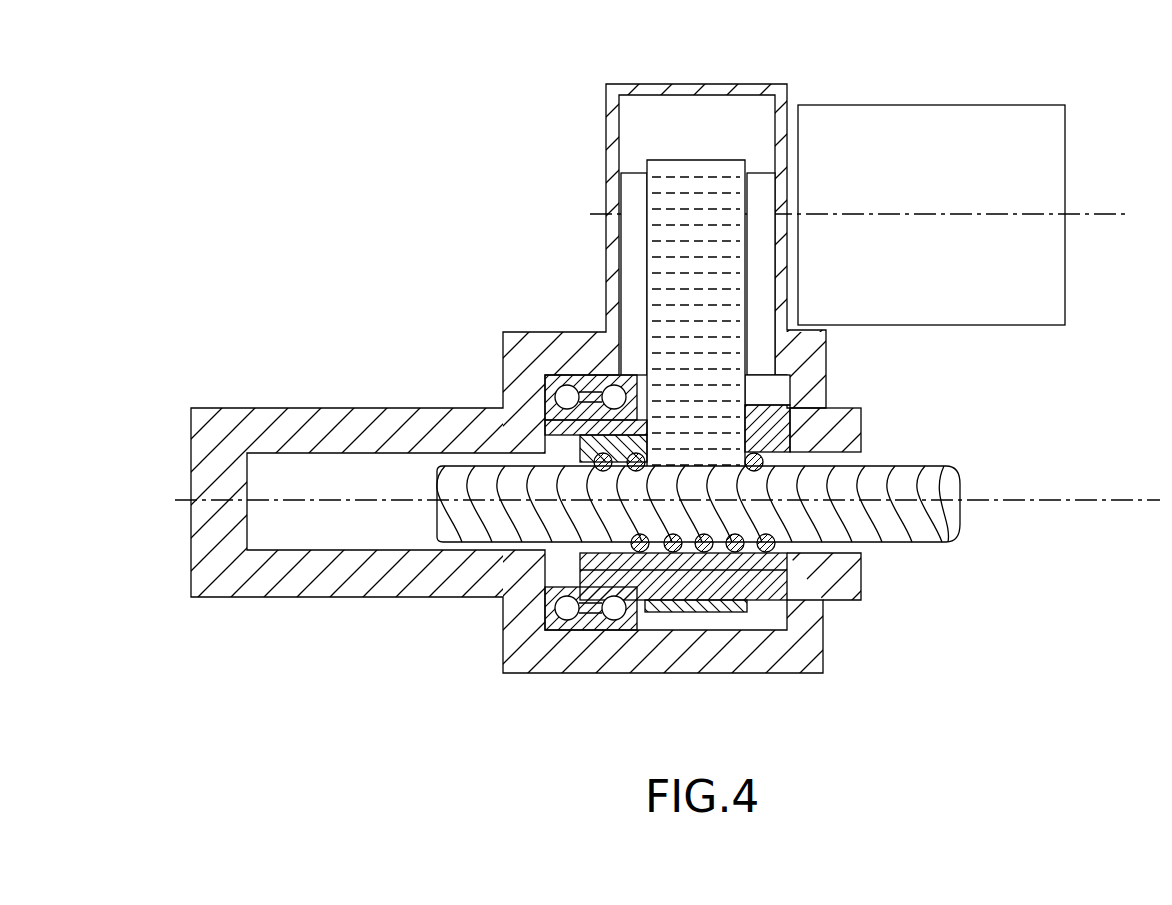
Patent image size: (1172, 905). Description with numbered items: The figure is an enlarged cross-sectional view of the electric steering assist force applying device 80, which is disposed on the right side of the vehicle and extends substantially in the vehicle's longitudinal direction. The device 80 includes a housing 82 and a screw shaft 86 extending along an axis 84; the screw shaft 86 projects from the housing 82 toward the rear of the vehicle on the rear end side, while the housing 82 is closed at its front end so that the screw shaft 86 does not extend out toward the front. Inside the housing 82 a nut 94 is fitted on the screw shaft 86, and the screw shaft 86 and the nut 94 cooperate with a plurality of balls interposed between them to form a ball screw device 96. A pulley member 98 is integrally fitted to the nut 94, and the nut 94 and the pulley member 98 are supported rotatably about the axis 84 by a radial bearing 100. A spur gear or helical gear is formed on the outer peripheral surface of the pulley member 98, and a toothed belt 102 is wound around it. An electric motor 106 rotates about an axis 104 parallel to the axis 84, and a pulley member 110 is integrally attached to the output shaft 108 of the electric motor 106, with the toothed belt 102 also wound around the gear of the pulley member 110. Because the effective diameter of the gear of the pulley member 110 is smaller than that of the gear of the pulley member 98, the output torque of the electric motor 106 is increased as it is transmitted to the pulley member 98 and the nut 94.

The electric steering assist force applying device 80 is at (1080, 91).
The housing 82 is at (368, 410).
The axis 84 is at (1084, 498).
The screw shaft 86 is at (940, 485).
The nut 94 is at (835, 430).
The ball screw device 96 is at (814, 600).
The pulley member 98 is at (702, 612).
The radial bearing 100 is at (567, 620).
The toothed belt 102 is at (646, 286).
The axis 104 is at (1101, 212).
The electric motor 106 is at (930, 110).
The output shaft 108 is at (793, 202).
The pulley member 110 is at (622, 205).